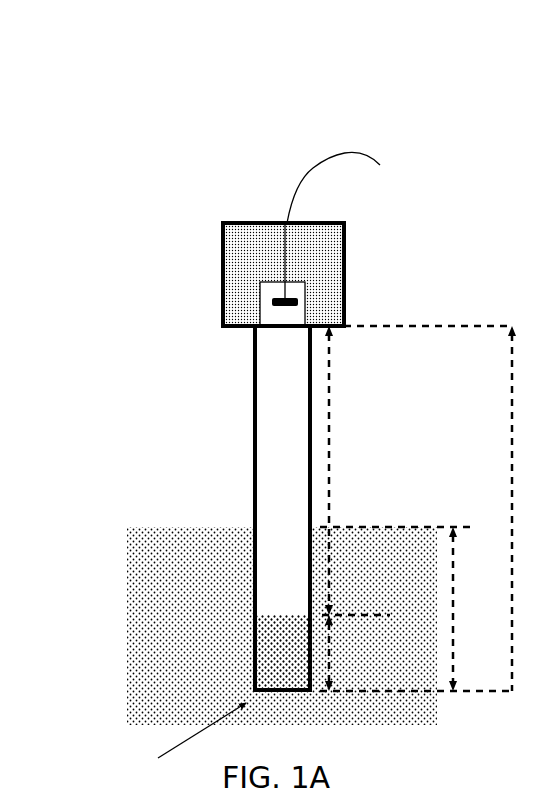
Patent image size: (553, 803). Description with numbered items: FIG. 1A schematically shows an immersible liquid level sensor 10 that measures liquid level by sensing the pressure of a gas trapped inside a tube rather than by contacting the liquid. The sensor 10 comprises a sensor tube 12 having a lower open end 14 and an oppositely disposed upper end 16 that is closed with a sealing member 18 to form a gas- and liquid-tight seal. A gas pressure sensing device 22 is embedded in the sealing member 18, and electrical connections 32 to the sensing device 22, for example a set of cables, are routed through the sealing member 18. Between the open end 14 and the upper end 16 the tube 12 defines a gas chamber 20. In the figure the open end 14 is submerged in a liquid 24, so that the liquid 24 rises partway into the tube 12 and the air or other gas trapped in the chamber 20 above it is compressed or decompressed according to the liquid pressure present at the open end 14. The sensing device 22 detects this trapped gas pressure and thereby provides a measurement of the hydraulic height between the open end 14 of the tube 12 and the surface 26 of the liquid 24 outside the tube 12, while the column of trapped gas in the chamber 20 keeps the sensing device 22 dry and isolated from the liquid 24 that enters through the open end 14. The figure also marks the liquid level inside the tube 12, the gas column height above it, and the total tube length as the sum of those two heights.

The immersible liquid level sensor 10 is at (399, 108).
The sensor tube 12 is at (254, 568).
The lower open end 14 is at (248, 692).
The upper end 16 is at (252, 330).
The sealing member 18 is at (328, 251).
The gas chamber 20 is at (280, 458).
The gas pressure sensing device 22 is at (263, 298).
The liquid 24 is at (282, 626).
The surface 26 is at (150, 522).
The electrical connections 32 is at (313, 168).